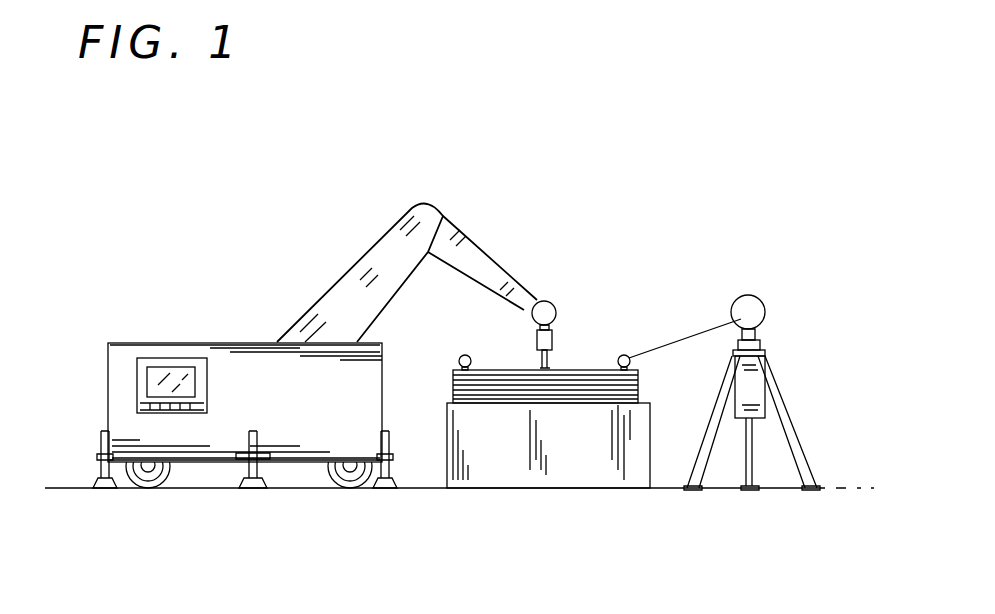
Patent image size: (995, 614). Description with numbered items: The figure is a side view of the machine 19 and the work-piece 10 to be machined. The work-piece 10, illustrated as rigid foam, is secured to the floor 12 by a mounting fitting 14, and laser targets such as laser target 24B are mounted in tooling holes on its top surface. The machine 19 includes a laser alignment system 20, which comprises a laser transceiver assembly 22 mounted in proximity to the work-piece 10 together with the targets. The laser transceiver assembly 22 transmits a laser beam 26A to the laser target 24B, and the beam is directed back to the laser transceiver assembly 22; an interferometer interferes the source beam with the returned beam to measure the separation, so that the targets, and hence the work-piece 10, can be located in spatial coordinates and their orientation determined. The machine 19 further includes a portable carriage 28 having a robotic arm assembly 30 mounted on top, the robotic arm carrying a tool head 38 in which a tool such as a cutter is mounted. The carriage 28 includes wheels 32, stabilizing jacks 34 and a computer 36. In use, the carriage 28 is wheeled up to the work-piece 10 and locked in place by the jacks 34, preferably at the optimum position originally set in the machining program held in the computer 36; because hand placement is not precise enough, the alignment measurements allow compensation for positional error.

The machine 19 is at (610, 185).
The robotic arm assembly 30 is at (475, 238).
The tool head 38 is at (535, 342).
The work-piece 10 is at (581, 370).
The laser target 24B is at (628, 352).
The laser beam 26A is at (690, 332).
The laser transceiver assembly 22 is at (765, 307).
The laser alignment system 20 is at (808, 405).
The floor 12 is at (838, 488).
The mounting fitting 14 is at (578, 477).
The portable carriage 28 is at (172, 343).
The computer 36 is at (147, 387).
The wheels 32 is at (168, 490).
The stabilizing jacks 34 is at (97, 486).